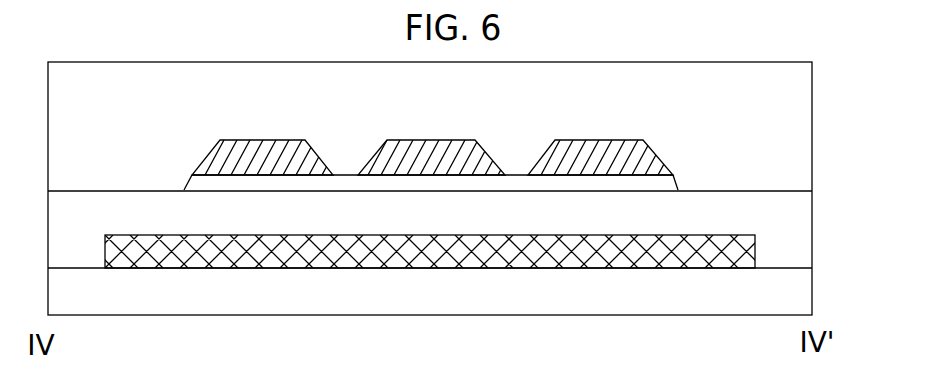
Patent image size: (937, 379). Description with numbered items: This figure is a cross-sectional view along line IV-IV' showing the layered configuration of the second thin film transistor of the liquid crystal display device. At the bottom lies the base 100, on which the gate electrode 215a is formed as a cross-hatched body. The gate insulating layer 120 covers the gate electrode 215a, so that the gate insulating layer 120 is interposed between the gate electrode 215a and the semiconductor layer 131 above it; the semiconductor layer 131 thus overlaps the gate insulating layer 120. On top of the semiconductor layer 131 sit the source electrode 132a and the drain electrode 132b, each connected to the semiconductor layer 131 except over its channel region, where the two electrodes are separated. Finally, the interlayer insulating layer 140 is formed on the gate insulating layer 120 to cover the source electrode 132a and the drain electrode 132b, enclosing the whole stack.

The interlayer insulating layer 140 is at (795, 82).
The gate insulating layer 120 is at (792, 205).
The substrate 100 is at (792, 295).
The gate electrode 215a is at (693, 252).
The semiconductor layer 131 is at (676, 182).
The source electrode 132a is at (254, 138).
The drain electrode 132b is at (431, 138).